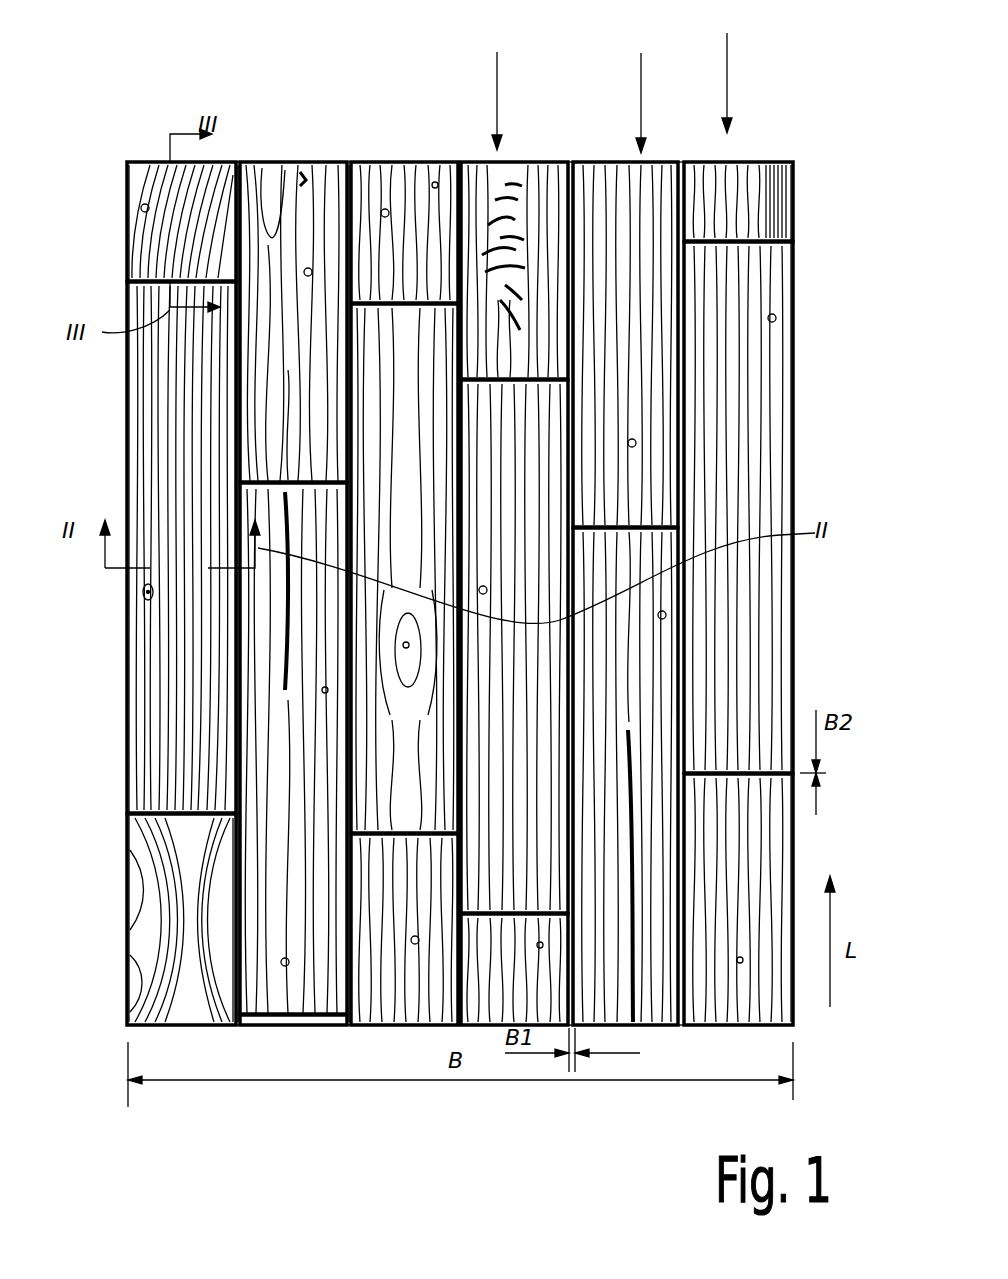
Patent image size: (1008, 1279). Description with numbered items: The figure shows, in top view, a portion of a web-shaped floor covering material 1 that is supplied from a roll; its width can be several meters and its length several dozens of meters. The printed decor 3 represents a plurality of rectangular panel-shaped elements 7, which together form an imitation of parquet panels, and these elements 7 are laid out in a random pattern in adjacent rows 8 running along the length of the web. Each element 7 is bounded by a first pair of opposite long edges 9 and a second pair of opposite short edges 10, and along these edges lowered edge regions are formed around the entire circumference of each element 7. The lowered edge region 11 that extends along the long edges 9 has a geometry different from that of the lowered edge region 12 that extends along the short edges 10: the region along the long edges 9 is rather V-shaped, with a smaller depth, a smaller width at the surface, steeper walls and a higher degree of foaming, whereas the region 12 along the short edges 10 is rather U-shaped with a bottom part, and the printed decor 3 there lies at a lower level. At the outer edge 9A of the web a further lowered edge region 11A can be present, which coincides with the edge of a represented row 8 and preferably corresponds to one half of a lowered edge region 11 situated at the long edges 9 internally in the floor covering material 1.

The floor covering material 1 is at (258, 1105).
The printed decor 3 is at (560, 168).
The panel-shaped elements 7 is at (314, 162).
The adjacent rows 8 is at (612, 79).
The long edges 9 is at (680, 409).
The edge of the web 9A is at (127, 212).
The short edges 10 is at (770, 222).
The lowered edge region along the long edges 11 is at (240, 155).
The lowered edge region at the web edge 11A is at (129, 162).
The lowered edge region along the short edges 12 is at (127, 281).